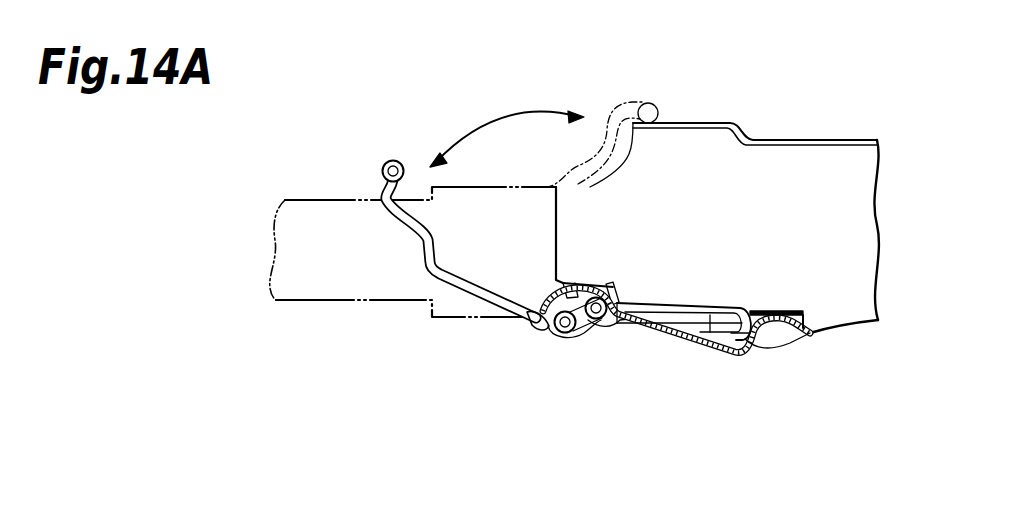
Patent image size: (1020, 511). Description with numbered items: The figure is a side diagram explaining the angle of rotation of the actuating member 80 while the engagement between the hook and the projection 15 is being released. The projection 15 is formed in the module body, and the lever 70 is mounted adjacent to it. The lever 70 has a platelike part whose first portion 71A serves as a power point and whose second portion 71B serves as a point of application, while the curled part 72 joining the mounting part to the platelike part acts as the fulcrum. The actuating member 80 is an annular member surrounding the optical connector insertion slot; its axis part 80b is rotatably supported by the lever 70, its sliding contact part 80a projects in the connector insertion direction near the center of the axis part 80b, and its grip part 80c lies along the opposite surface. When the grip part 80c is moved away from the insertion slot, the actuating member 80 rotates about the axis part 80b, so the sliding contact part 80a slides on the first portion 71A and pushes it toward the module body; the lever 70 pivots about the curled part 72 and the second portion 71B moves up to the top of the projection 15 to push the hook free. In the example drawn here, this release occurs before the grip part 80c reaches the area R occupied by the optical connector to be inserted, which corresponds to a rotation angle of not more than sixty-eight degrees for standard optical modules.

The projection 15 is at (845, 312).
The lever 70 is at (690, 354).
The first portion 71A is at (527, 327).
The second portion 71B is at (798, 334).
The curled part 72 is at (752, 338).
The actuating member 80 is at (408, 235).
The sliding contact part 80a is at (610, 327).
The axis part 80b is at (560, 333).
The grip part 80c is at (388, 160).
The area occupied by the optical connector R is at (331, 302).